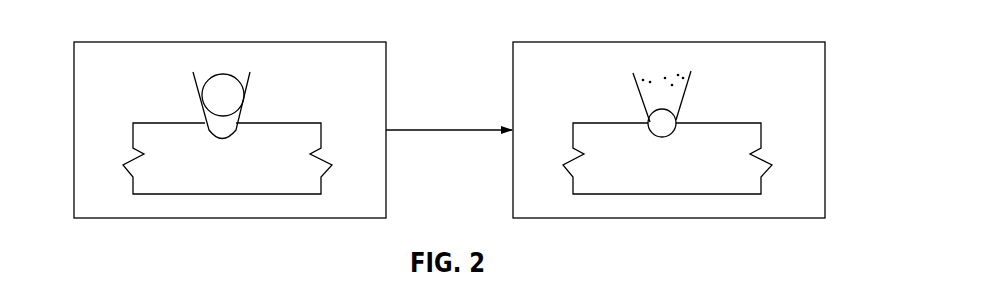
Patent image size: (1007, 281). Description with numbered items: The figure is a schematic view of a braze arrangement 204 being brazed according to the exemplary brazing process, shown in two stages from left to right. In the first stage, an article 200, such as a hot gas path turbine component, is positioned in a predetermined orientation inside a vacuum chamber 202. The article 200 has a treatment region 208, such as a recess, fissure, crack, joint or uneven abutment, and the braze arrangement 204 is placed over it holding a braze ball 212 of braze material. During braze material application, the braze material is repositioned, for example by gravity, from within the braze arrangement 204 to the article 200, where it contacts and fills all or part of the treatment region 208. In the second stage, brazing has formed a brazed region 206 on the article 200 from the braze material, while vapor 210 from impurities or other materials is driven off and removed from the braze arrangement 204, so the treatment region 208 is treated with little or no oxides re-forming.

The article 200 is at (238, 186).
The vacuum chamber 202 is at (74, 70).
The braze arrangement 204 is at (495, 94).
The brazed region 206 is at (658, 128).
The treatment region 208 is at (228, 138).
The vapor 210 is at (652, 77).
The braze ball 212 is at (244, 74).